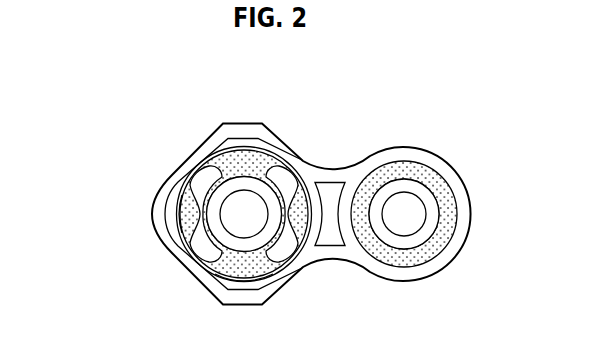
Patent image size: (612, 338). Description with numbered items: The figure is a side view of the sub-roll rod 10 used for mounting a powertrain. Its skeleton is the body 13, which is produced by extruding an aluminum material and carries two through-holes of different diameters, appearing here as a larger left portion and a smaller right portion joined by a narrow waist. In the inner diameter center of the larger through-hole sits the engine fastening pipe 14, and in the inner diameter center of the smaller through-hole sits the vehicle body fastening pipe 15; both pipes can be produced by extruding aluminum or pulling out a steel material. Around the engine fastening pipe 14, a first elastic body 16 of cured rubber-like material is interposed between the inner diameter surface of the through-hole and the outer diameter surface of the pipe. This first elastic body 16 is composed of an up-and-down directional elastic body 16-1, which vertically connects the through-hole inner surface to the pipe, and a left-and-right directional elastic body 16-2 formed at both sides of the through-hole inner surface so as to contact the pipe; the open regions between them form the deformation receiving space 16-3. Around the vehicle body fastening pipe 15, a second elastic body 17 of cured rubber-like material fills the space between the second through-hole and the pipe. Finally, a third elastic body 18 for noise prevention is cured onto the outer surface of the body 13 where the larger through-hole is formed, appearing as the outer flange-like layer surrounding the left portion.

The sub-roll rod 10 is at (310, 114).
The body 13 is at (337, 158).
The engine fastening pipe 14 is at (219, 198).
The vehicle body fastening pipe 15 is at (415, 185).
The first elastic body 16 is at (59, 263).
The up-and-down directional elastic body 16-1 is at (232, 261).
The left-and-right directional elastic body 16-2 is at (183, 222).
The deformation receiving space 16-3 is at (201, 188).
The second elastic body 17 is at (447, 200).
The third elastic body 18 is at (232, 130).